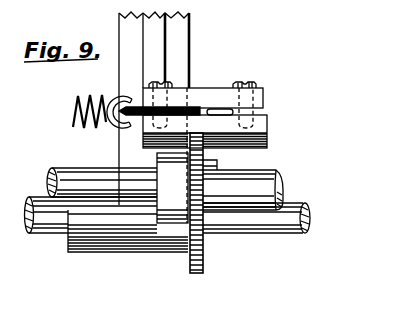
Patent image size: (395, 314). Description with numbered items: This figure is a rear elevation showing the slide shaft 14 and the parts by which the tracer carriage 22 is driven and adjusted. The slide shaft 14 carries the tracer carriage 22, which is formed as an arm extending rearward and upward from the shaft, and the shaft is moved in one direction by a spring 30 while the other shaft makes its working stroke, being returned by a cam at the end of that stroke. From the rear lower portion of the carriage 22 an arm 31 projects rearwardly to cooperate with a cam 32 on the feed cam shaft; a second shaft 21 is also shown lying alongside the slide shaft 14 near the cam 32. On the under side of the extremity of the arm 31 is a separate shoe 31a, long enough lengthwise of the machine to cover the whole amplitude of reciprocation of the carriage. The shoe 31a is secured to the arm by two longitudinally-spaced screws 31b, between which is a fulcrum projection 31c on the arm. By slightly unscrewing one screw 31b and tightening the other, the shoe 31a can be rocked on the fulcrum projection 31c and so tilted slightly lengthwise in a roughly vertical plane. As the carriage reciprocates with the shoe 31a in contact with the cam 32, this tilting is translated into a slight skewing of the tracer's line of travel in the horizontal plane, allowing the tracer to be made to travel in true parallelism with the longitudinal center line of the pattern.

The slide shaft 14 is at (52, 234).
The shaft 21 is at (265, 173).
The tracer carriage 22 is at (189, 43).
The spring 30 is at (74, 128).
The arm 31 is at (203, 91).
The shoe 31a is at (264, 128).
The screws 31b is at (146, 83).
The fulcrum projection 31c is at (198, 112).
The cam 32 is at (205, 265).